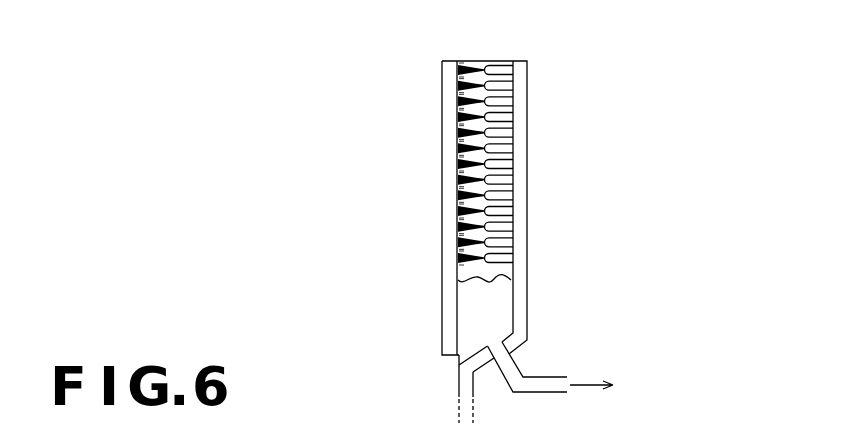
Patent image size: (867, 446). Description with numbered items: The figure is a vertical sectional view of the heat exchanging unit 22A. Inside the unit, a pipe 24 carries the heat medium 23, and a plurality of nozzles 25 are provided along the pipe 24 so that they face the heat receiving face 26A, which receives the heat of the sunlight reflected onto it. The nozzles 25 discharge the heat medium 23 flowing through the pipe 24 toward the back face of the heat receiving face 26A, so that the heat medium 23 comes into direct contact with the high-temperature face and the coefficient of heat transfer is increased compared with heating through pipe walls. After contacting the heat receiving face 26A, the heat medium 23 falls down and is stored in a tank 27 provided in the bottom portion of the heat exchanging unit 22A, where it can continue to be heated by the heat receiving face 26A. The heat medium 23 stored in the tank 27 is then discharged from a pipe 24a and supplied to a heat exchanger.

The heat exchanging unit 22A is at (587, 72).
The heat medium 23 is at (497, 312).
The pipe 24 is at (520, 162).
The pipe 24a is at (540, 393).
The nozzle 25 is at (500, 70).
The heat receiving face 26A is at (450, 158).
The tank 27 is at (468, 276).